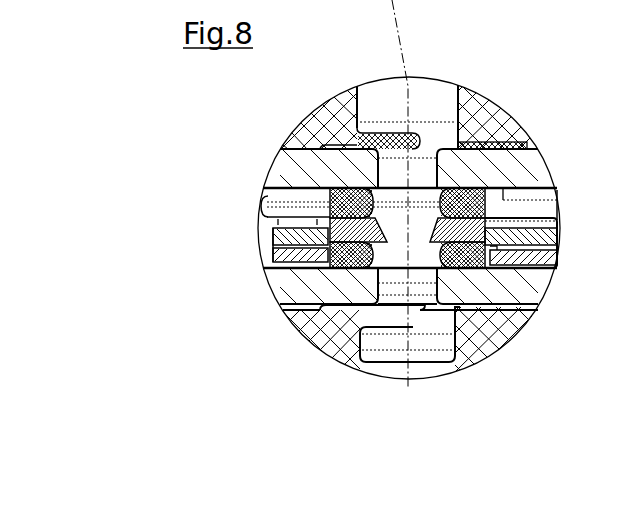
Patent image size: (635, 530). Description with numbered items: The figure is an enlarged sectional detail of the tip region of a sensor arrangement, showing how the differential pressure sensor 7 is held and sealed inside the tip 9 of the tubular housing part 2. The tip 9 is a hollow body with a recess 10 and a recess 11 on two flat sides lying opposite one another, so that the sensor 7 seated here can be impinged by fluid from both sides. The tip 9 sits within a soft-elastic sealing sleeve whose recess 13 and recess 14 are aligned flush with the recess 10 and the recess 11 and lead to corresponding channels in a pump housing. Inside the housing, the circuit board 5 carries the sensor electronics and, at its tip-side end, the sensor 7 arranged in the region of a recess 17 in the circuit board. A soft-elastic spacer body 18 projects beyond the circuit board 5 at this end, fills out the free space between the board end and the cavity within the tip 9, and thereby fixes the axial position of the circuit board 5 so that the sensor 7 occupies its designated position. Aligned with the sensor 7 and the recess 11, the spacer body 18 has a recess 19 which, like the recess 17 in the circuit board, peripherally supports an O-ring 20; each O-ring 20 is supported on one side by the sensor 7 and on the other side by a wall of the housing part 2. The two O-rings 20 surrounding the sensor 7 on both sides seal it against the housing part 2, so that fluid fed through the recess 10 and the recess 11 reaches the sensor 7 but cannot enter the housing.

The tubular housing part 2 is at (525, 183).
The circuit board 5 is at (540, 222).
The sensor 7 is at (407, 234).
The tip 9 is at (267, 173).
The recess 10 is at (418, 166).
The recess 11 is at (425, 287).
The recess 13 is at (398, 122).
The recess 14 is at (383, 350).
The recess 17 is at (433, 192).
The spacer body 18 is at (265, 252).
The recess 19 is at (385, 268).
The O-ring 20 is at (328, 200).